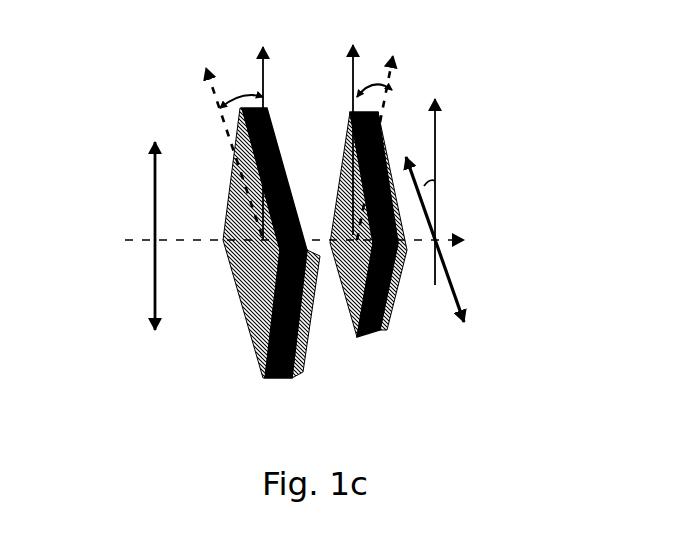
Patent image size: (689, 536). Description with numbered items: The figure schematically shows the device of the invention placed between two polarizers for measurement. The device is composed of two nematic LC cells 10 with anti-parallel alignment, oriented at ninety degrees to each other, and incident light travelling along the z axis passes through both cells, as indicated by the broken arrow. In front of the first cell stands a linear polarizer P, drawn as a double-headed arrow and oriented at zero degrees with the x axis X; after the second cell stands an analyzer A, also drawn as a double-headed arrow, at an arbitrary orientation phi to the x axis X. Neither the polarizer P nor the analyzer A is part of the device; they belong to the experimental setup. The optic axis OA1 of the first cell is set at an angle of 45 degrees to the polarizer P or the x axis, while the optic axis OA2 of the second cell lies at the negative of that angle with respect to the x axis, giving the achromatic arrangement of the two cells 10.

The nematic LC cell 10 is at (292, 378).
The polarizer P is at (157, 263).
The analyzer A is at (435, 242).
The x axis X is at (353, 149).
The optic axis of the first cell OA1 is at (195, 127).
The optic axis of the second cell OA2 is at (407, 120).
The 45 degree angle 45 is at (303, 74).